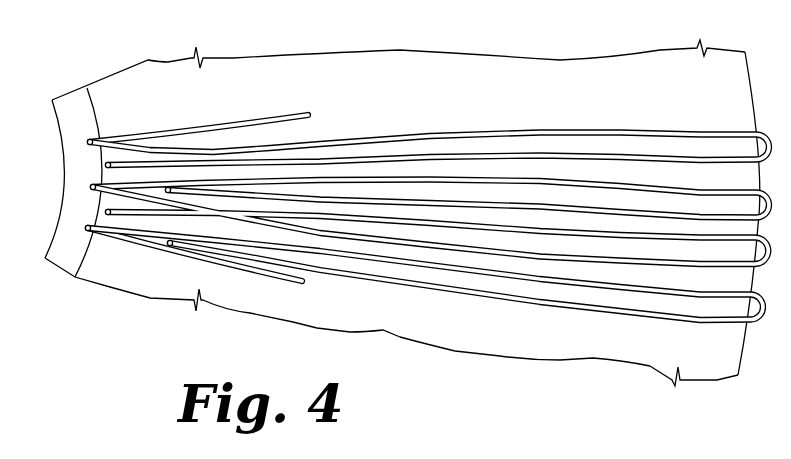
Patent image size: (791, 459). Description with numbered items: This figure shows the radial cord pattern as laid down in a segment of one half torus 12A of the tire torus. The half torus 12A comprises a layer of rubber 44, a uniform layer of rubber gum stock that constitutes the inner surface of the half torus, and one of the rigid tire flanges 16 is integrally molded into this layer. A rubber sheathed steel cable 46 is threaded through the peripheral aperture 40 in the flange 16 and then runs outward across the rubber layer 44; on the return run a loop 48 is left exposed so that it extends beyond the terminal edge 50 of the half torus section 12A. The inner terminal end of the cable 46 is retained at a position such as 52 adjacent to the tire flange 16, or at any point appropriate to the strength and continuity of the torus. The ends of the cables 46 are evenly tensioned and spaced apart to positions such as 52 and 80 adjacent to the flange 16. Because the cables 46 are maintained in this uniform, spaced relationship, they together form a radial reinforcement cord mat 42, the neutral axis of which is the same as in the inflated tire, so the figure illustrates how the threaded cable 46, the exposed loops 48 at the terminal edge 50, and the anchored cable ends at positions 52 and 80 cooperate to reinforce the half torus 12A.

The half torus 12A is at (606, 362).
The flange 16 is at (76, 134).
The aperture 40 is at (95, 189).
The radial reinforcement cord mat 42 is at (457, 351).
The layer of rubber 44 is at (170, 67).
The cable 46 is at (338, 272).
The loop 48 is at (757, 325).
The terminal edge 50 is at (757, 86).
The position 52 is at (104, 214).
The position 80 is at (102, 168).